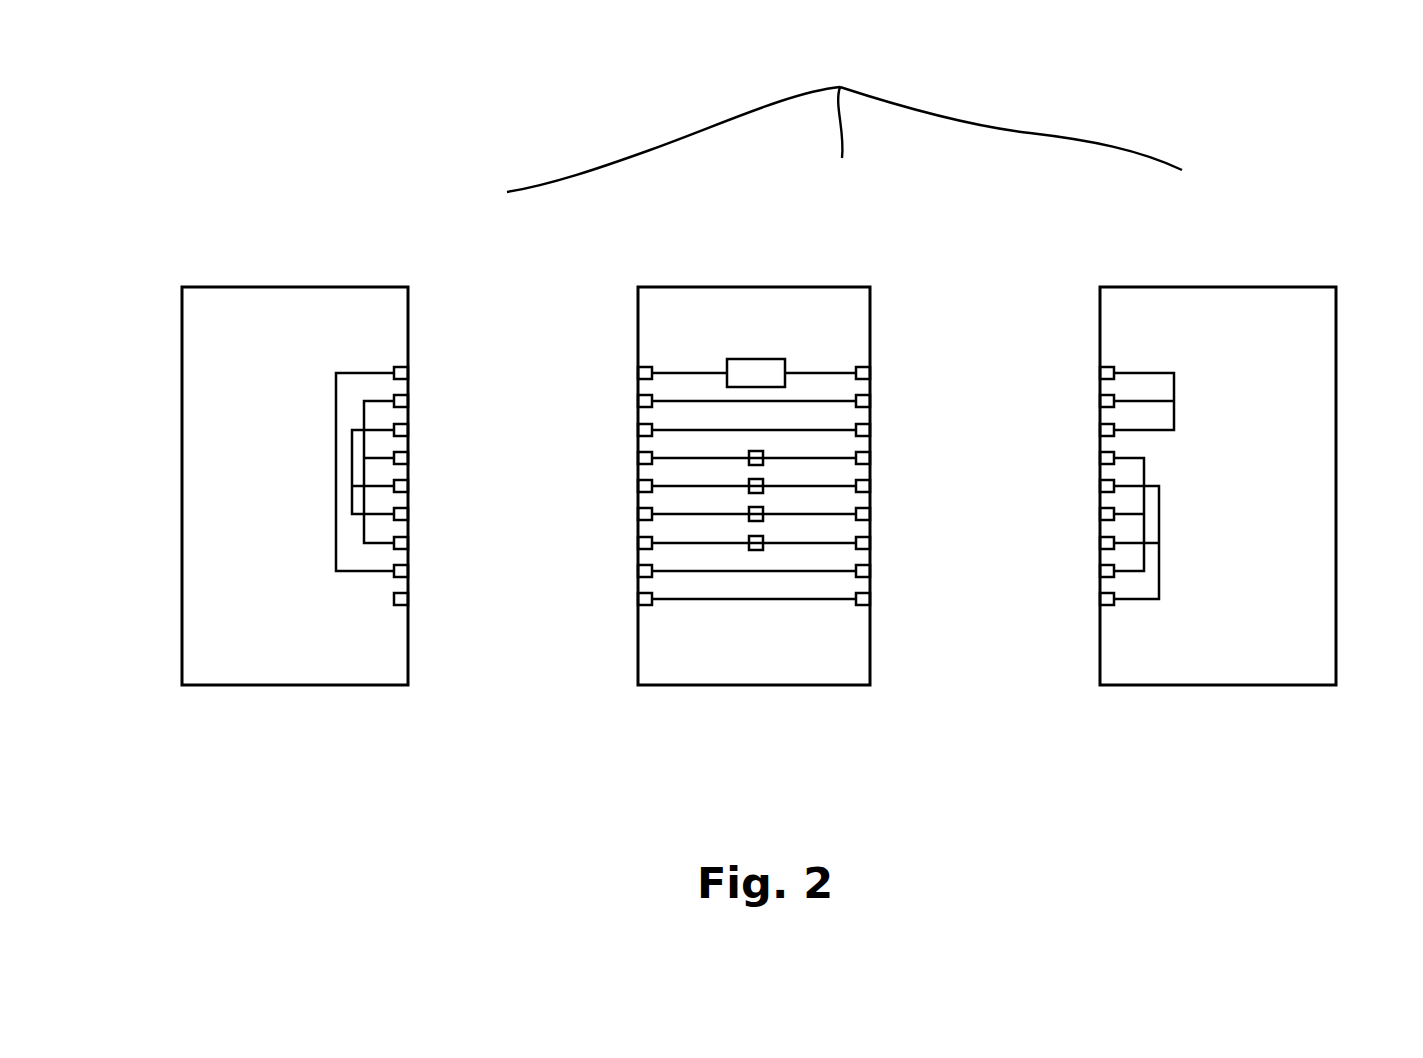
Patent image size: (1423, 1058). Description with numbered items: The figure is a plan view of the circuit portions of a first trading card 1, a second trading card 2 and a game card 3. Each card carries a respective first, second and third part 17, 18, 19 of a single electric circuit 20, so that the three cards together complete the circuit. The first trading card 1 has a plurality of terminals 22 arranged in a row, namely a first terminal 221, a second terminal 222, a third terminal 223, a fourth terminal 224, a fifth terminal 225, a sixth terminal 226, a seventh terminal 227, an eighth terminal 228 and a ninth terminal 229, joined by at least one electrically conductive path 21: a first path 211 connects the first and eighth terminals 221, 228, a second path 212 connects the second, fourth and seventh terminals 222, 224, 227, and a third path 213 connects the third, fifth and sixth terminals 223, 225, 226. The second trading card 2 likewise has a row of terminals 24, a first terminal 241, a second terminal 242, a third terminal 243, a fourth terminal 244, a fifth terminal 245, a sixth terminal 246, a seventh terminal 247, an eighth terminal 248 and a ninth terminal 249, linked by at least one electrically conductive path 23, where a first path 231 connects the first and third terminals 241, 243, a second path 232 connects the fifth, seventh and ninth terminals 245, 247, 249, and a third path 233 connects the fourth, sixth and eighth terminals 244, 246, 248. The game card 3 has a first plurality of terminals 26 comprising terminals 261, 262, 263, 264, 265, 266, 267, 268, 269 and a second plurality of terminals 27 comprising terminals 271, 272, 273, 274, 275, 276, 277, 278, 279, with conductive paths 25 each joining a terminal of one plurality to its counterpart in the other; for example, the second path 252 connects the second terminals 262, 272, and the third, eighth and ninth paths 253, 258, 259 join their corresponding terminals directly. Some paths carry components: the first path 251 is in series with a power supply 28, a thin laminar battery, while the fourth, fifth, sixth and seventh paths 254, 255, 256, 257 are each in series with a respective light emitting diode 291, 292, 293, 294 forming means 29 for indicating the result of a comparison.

The first trading card 1 is at (295, 713).
The second trading card 2 is at (1193, 713).
The game card 3 is at (757, 713).
The first part of electric circuit 17 is at (382, 314).
The second part of electric circuit 18 is at (1145, 314).
The third part of electric circuit 19 is at (757, 314).
The electric circuit 20 is at (844, 117).
The electrically conductive path 21 is at (238, 509).
The first electrically conductive path 211 is at (336, 401).
The second electrically conductive path 212 is at (364, 523).
The third electrically conductive path 213 is at (352, 463).
The plurality of terminals 22 is at (472, 673).
The first terminal 221 is at (408, 373).
The second terminal 222 is at (408, 401).
The third terminal 223 is at (408, 430).
The fourth terminal 224 is at (408, 458).
The fifth terminal 225 is at (408, 486).
The sixth terminal 226 is at (408, 514).
The seventh terminal 227 is at (408, 543).
The eighth terminal 228 is at (408, 571).
The ninth terminal 229 is at (408, 599).
The electrically conductive path 23 is at (1278, 548).
The first electrically conductive path 231 is at (1174, 403).
The second electrically conductive path 232 is at (1159, 557).
The third electrically conductive path 233 is at (1144, 473).
The plurality of terminals 24 is at (1039, 673).
The first terminal 241 is at (1100, 373).
The second terminal 242 is at (1100, 401).
The third terminal 243 is at (1100, 430).
The fourth terminal 244 is at (1100, 458).
The fifth terminal 245 is at (1100, 486).
The sixth terminal 246 is at (1100, 514).
The seventh terminal 247 is at (1100, 543).
The eighth terminal 248 is at (1100, 571).
The ninth terminal 249 is at (1100, 599).
The conductive paths 25 is at (685, 614).
The first conductive path 251 is at (664, 373).
The second conductive path 252 is at (664, 401).
The third conductive path 253 is at (664, 430).
The fourth conductive path 254 is at (664, 458).
The fifth conductive path 255 is at (664, 486).
The sixth conductive path 256 is at (664, 514).
The seventh conductive path 257 is at (664, 543).
The eighth conductive path 258 is at (664, 571).
The ninth conductive path 259 is at (664, 599).
The first plurality of terminals 26 is at (578, 673).
The first terminal 261 is at (638, 373).
The second terminal 262 is at (638, 401).
The third terminal 263 is at (638, 430).
The fourth terminal 264 is at (638, 458).
The fifth terminal 265 is at (638, 486).
The sixth terminal 266 is at (638, 514).
The seventh terminal 267 is at (638, 543).
The eighth terminal 268 is at (638, 571).
The ninth terminal 269 is at (638, 599).
The second plurality of terminals 27 is at (977, 673).
The first terminal 271 is at (870, 373).
The second terminal 272 is at (870, 401).
The third terminal 273 is at (870, 430).
The fourth terminal 274 is at (870, 458).
The fifth terminal 275 is at (870, 486).
The sixth terminal 276 is at (870, 514).
The seventh terminal 277 is at (870, 543).
The eighth terminal 278 is at (870, 571).
The ninth terminal 279 is at (870, 599).
The power supply 28 is at (742, 372).
The means for indicating a result of a comparison 29 is at (771, 614).
The light emitting diode 291 is at (762, 451).
The light emitting diode 292 is at (762, 479).
The light emitting diode 293 is at (762, 507).
The light emitting diode 294 is at (762, 536).